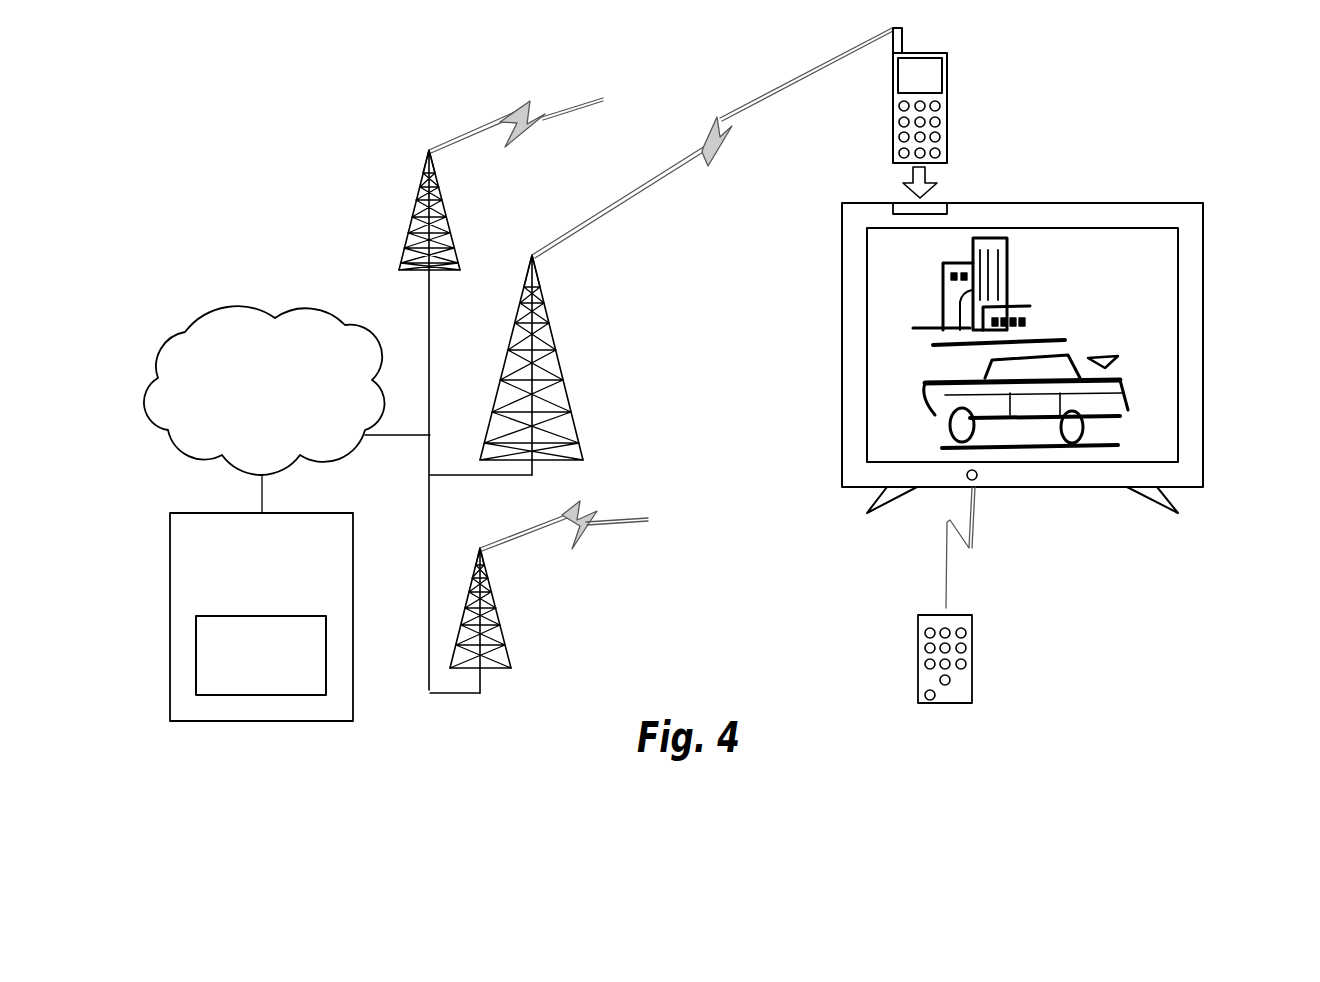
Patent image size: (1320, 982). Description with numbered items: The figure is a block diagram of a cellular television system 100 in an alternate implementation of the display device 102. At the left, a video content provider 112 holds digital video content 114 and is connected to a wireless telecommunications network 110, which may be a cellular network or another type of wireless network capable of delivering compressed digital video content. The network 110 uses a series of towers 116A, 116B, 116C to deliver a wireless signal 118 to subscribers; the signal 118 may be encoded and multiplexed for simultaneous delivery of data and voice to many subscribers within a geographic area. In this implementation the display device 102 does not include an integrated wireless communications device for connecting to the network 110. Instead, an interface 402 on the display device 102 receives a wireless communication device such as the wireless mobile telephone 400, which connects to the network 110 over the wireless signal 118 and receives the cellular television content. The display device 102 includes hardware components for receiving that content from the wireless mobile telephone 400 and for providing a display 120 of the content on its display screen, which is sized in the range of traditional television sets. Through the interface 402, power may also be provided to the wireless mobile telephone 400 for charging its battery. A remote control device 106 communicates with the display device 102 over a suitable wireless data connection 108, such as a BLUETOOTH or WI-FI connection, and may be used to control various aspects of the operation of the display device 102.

The video content delivery system 100 is at (265, 110).
The wireless telecommunications network 110 is at (243, 313).
The video content provider 112 is at (348, 533).
The digital video content 114 is at (307, 690).
The tower 116A is at (406, 260).
The tower 116B is at (576, 426).
The tower 116C is at (506, 655).
The wireless signal 118 is at (524, 112).
The wireless mobile telephone 400 is at (948, 100).
The interface 402 is at (896, 208).
The display device 102 is at (1180, 208).
The display 120 is at (1158, 338).
The wireless data connection 108 is at (970, 553).
The remote control device 106 is at (966, 683).